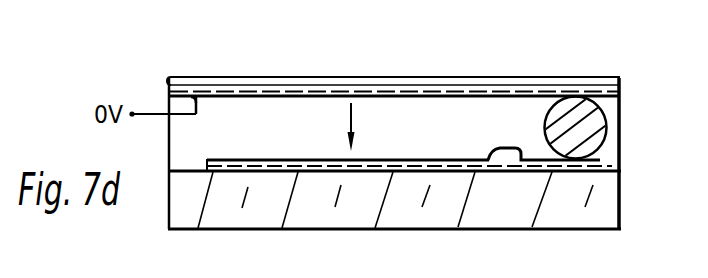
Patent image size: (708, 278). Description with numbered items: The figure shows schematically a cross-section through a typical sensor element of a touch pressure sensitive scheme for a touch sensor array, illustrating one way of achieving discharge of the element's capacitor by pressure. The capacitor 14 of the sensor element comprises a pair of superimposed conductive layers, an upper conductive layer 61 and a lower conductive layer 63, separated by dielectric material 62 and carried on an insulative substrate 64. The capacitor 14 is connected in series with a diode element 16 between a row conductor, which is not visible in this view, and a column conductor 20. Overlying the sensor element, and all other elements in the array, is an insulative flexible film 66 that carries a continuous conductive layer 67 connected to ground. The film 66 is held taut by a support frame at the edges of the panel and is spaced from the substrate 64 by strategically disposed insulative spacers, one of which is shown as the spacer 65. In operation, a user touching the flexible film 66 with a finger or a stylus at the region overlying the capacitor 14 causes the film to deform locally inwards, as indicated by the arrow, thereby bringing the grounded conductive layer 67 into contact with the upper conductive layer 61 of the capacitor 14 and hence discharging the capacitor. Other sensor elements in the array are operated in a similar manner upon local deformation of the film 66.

The capacitor 14 is at (450, 137).
The diode element 16 is at (507, 157).
The column conductor 20 is at (567, 172).
The upper conductive layer 61 is at (268, 156).
The dielectric material 62 is at (233, 172).
The lower conductive layer 63 is at (308, 172).
The insulative substrate 64 is at (360, 214).
The insulative spacer 65 is at (599, 127).
The insulative flexible film 66 is at (565, 77).
The conductive layer 67 is at (490, 91).